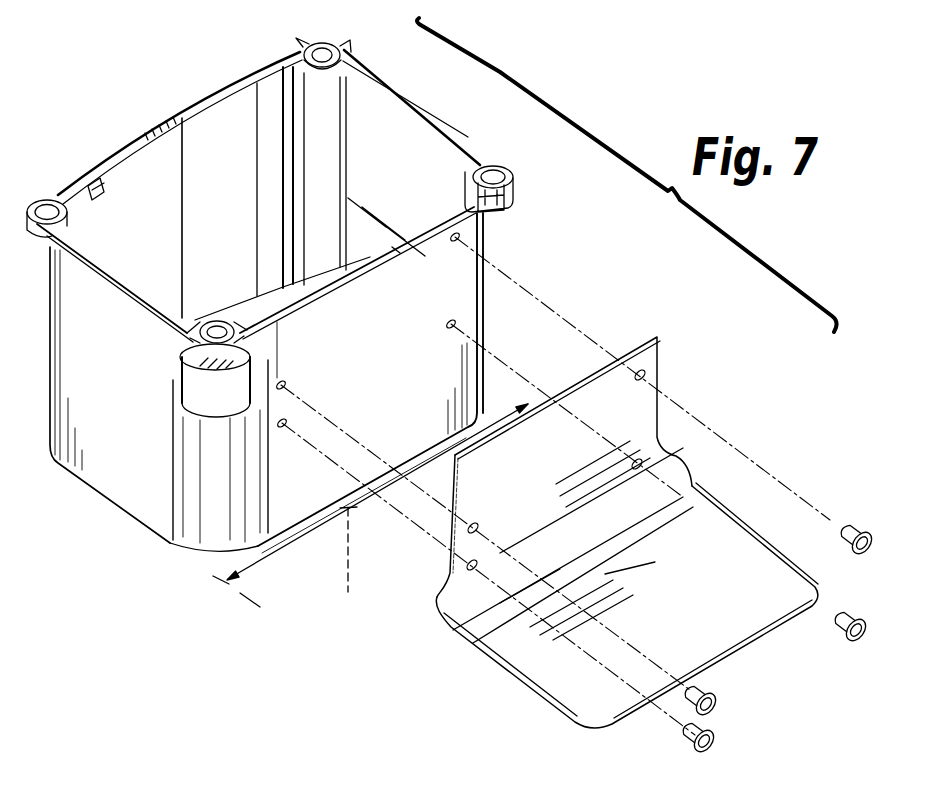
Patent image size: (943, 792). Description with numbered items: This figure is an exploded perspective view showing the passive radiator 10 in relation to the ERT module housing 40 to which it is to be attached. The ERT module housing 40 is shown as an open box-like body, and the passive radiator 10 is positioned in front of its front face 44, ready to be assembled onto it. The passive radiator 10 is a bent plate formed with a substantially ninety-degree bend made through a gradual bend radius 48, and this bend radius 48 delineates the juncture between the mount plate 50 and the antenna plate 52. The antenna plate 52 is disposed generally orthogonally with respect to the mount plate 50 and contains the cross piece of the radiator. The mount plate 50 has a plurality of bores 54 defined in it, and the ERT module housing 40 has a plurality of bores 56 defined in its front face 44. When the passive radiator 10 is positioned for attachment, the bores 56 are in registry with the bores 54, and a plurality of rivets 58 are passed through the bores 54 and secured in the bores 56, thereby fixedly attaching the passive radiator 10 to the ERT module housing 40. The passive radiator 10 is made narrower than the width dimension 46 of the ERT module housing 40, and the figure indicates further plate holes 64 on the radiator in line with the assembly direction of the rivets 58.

The passive radiator 10 is at (642, 318).
The ERT module housing 40 is at (143, 130).
The front face 44 is at (283, 500).
The width dimension 46 is at (347, 585).
The bend radius 48 is at (446, 612).
The mount plate 50 is at (453, 522).
The antenna plate 52 is at (553, 688).
The bores 54 is at (466, 566).
The bores 56 is at (458, 322).
The rivets 58 is at (718, 743).
The flange holes 64 is at (645, 460).